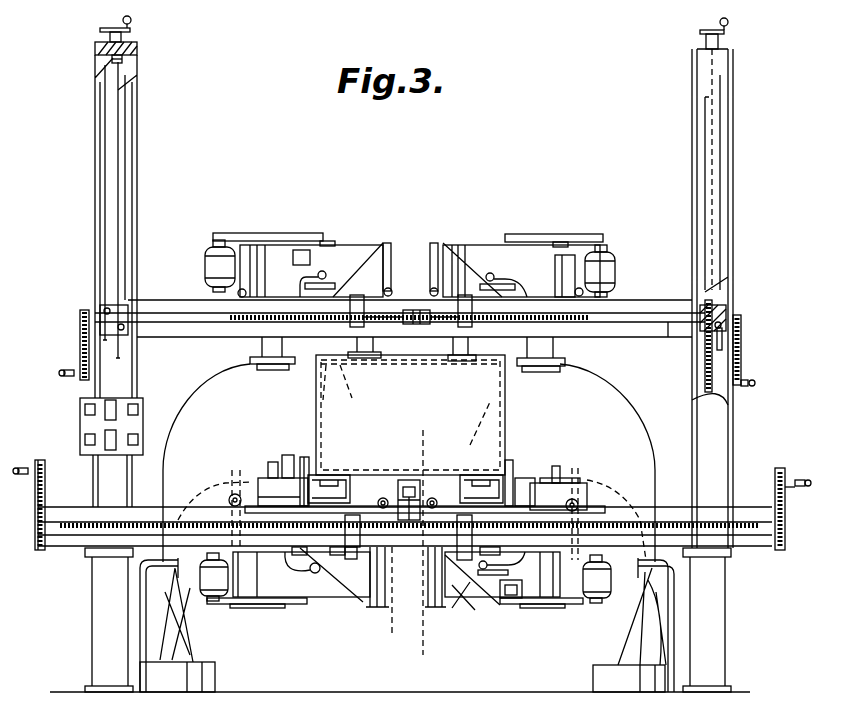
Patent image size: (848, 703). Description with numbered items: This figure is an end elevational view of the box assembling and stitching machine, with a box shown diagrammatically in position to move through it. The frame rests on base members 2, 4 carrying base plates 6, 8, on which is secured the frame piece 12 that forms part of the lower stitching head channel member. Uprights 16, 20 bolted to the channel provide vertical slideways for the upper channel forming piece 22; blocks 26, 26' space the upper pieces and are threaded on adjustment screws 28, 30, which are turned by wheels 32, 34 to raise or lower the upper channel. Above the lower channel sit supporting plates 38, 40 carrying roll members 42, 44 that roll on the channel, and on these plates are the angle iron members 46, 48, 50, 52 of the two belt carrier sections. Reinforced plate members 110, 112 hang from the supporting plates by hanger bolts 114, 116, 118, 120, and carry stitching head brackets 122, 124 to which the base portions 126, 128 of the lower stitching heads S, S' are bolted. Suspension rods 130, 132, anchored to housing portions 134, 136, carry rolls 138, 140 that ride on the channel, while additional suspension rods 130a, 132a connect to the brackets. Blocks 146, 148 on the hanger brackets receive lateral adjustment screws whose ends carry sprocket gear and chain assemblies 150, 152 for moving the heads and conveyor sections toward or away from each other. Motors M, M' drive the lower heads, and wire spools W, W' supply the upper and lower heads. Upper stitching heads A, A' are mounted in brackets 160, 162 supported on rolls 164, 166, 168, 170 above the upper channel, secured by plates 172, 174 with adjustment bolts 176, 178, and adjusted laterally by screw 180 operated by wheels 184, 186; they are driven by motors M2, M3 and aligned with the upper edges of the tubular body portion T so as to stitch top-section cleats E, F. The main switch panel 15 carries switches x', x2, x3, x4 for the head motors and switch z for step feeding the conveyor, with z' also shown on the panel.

The base member 2 is at (93, 624).
The base member 4 is at (740, 621).
The base plate 6 is at (68, 553).
The base plate 8 is at (746, 556).
The frame piece 12 is at (660, 508).
The main switch panel 15 is at (80, 419).
The upright 16 is at (97, 476).
The upright 20 is at (718, 450).
The channel forming piece 22 is at (650, 306).
The block 26 is at (735, 311).
The block 26' is at (141, 303).
The adjustment screw 28 is at (713, 358).
The adjustment screw 30 is at (122, 72).
The wheel 32 is at (728, 31).
The wheel 34 is at (130, 31).
The supporting plate 38 is at (330, 512).
The supporting plate 40 is at (490, 512).
The roll member 42 is at (386, 497).
The roll member 44 is at (431, 497).
The angle iron member 46 is at (462, 498).
The angle iron member 48 is at (522, 490).
The angle iron member 50 is at (377, 498).
The angle iron member 52 is at (300, 497).
The reinforced plate member 110 is at (316, 573).
The reinforced plate member 112 is at (497, 550).
The hanger bolt 114 is at (453, 527).
The hanger bolt 116 is at (478, 566).
The hanger bolt 118 is at (342, 548).
The hanger bolt 120 is at (300, 548).
The stitching head bracket 122 is at (366, 604).
The stitching head bracket 124 is at (502, 587).
The base portion 126 is at (318, 590).
The base portion 128 is at (542, 583).
The suspension rod 130 is at (586, 517).
The suspension rod 130a is at (474, 423).
The suspension rod 132 is at (214, 508).
The suspension rod 132a is at (391, 604).
The housing portion 134 is at (580, 592).
The housing portion 136 is at (237, 583).
The roll 138 is at (579, 505).
The roll 140 is at (234, 494).
The block 146 is at (352, 548).
The block 148 is at (500, 588).
The sprocket gear and chain assembly 150 is at (782, 550).
The sprocket gear and chain assembly 152 is at (30, 548).
The stitching head bracket 160 is at (340, 284).
The stitching head bracket 162 is at (448, 246).
The roll 164 is at (393, 290).
The roll 166 is at (452, 290).
The roll 168 is at (240, 298).
The roll 170 is at (580, 298).
The plate 172 is at (360, 352).
The plate 174 is at (463, 353).
The adjustment bolt 176 is at (364, 323).
The adjustment bolt 178 is at (435, 325).
The screw 180 is at (666, 334).
The wheel 184 is at (76, 362).
The wheel 186 is at (746, 385).
The upper stitching head A is at (541, 366).
The upper stitching head A' is at (272, 366).
The cleat E is at (330, 383).
The cleat F is at (350, 381).
The motor M is at (596, 580).
The motor M' is at (214, 577).
The stitching motor M2 is at (210, 250).
The stitching motor M3 is at (606, 252).
The stitching head S is at (558, 479).
The stitching head S' is at (283, 471).
The tubular body portion T is at (521, 422).
The spool W is at (610, 678).
The spool W' is at (195, 676).
The switch x' is at (57, 399).
The switch x2 is at (85, 441).
The switch x3 is at (139, 406).
The switch x4 is at (139, 441).
The switch z is at (111, 393).
The switch z' is at (130, 458).